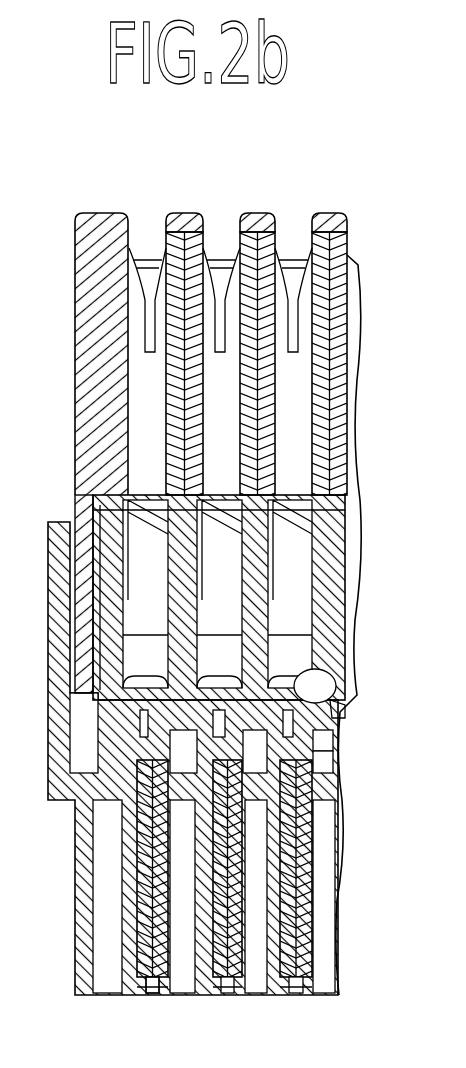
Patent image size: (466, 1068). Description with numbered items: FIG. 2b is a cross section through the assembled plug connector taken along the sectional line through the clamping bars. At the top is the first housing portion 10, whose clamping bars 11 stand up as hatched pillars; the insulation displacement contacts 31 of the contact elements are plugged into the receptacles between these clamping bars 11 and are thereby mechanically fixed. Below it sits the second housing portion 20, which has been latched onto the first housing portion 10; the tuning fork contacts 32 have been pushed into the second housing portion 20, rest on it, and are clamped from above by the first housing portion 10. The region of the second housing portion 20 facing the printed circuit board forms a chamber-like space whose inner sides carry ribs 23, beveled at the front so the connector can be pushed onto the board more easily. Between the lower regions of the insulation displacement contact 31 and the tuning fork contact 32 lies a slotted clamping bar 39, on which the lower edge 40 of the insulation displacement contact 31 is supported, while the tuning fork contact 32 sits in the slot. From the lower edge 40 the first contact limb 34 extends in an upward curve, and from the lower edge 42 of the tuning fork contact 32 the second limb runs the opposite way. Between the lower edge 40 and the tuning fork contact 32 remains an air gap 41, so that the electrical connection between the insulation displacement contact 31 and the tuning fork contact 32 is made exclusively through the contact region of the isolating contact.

The first housing portion 10 is at (92, 246).
The clamping bars 11 is at (325, 226).
The second housing portion 20 is at (82, 870).
The ribs 23 is at (158, 993).
The insulation displacement contact 31 is at (322, 573).
The tuning fork contact 32 is at (271, 988).
The first contact limb 34 is at (300, 607).
The slotted clamping bar 39 is at (340, 716).
The lower edge 40 is at (347, 668).
The air gap 41 is at (338, 741).
The lower edge 42 is at (338, 765).